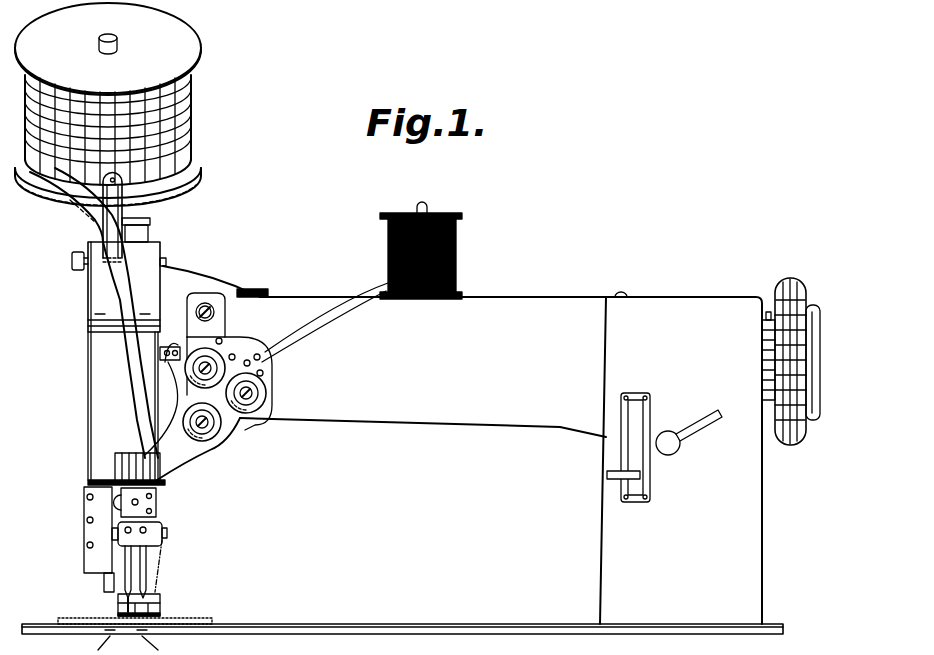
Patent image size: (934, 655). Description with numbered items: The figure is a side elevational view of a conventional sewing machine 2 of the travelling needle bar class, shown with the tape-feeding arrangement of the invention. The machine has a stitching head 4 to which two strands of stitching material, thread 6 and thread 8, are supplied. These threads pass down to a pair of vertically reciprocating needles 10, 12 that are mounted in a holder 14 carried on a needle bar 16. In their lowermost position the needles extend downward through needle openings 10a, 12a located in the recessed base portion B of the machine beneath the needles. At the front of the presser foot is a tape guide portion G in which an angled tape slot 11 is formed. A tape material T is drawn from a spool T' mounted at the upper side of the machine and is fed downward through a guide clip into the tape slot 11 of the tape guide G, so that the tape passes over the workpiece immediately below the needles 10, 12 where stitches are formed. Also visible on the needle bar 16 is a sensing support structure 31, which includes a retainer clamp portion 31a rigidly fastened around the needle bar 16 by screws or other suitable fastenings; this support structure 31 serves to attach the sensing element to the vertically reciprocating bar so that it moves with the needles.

The spool T' is at (133, 104).
The tape material T is at (94, 313).
The sewing machine 2 is at (617, 523).
The stitching head 4 is at (196, 453).
The thread 6 is at (268, 335).
The thread 8 is at (291, 334).
The needle bar 16 is at (140, 463).
The sensing support structure 31 is at (98, 498).
The retainer clamp portion 31a is at (147, 502).
The holder 14 is at (163, 533).
The needle 10 is at (133, 570).
The needle 12 is at (148, 578).
The tape slot 11 is at (126, 603).
The tape guide portion G is at (162, 603).
The recessed base portion B is at (256, 621).
The needle opening 10a is at (88, 642).
The needle opening 12a is at (160, 642).